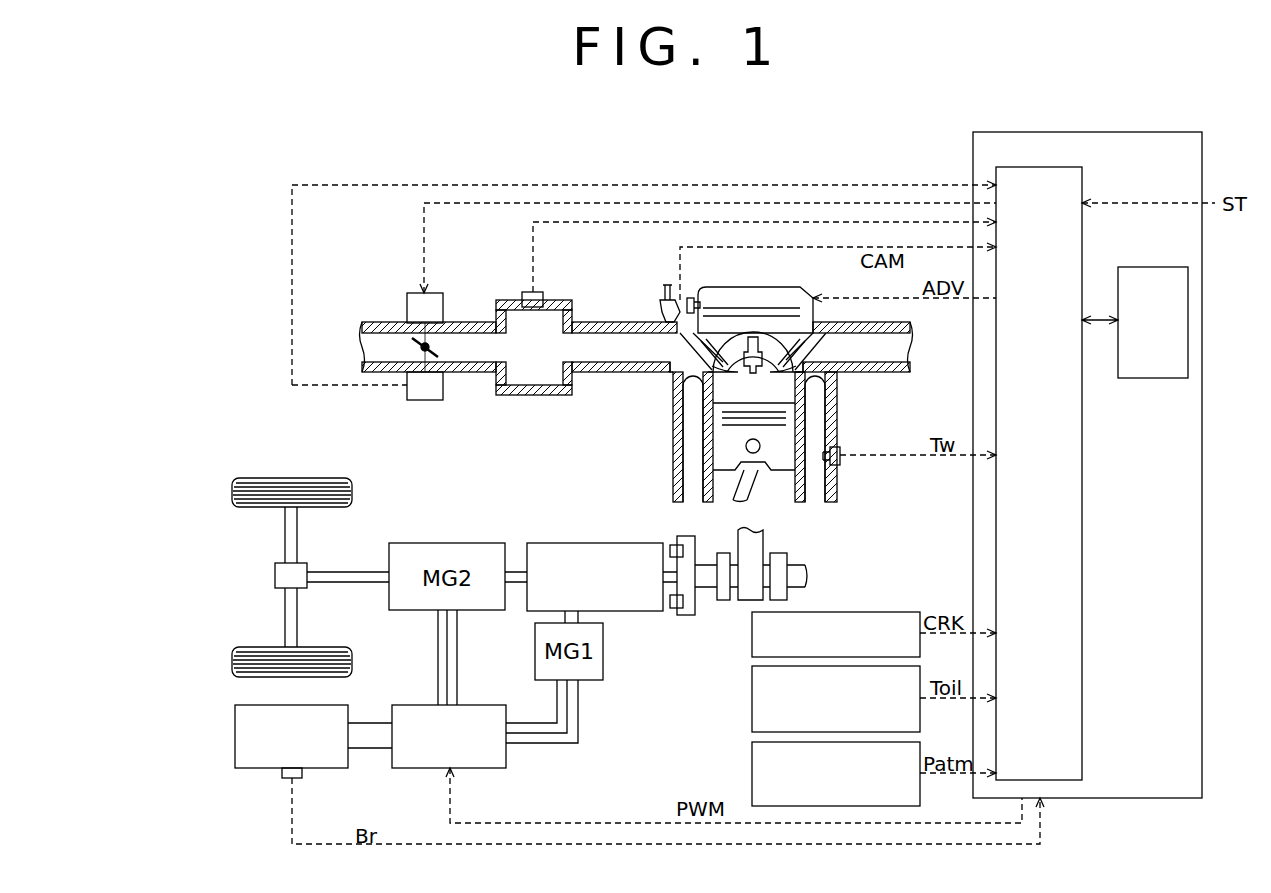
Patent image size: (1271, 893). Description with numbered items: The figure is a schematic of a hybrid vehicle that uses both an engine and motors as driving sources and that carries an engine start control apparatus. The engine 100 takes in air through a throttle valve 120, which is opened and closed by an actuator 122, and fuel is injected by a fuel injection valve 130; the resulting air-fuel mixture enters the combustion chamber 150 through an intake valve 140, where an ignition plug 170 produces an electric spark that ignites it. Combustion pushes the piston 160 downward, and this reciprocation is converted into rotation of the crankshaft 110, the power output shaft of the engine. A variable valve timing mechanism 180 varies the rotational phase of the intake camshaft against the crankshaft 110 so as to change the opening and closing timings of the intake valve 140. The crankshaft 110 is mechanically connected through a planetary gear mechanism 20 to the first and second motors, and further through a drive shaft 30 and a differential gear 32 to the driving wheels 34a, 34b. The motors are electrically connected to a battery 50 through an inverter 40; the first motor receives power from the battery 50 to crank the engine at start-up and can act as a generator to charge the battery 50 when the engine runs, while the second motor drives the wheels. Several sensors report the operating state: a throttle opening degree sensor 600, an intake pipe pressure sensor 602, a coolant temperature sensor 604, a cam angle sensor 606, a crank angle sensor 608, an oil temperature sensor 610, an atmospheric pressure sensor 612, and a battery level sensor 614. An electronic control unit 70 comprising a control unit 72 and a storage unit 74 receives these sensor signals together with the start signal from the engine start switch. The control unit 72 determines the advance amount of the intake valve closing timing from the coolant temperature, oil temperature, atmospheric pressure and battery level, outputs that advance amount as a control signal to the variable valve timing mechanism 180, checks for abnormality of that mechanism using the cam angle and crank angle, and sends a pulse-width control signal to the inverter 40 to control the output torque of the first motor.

The planetary gear mechanism 20 is at (608, 543).
The drive shaft 30 is at (348, 570).
The differential gear 32 is at (275, 577).
The driving wheel 34a is at (290, 478).
The driving wheel 34b is at (245, 678).
The inverter 40 is at (506, 760).
The battery 50 is at (235, 750).
The electronic control unit (ECU) 70 is at (1135, 132).
The control unit 72 is at (1082, 698).
The storage unit 74 is at (1150, 378).
The engine 100 is at (858, 526).
The crankshaft 110 is at (705, 597).
The throttle valve 120 is at (438, 352).
The actuator 122 is at (445, 306).
The fuel injection valve 130 is at (658, 300).
The intake valve 140 is at (697, 385).
The combustion chamber 150 is at (793, 396).
The piston 160 is at (788, 470).
The ignition plug 170 is at (751, 374).
The variable valve timing mechanism 180 is at (793, 278).
The throttle opening degree sensor 600 is at (425, 401).
The intake pipe pressure sensor 602 is at (543, 297).
The coolant temperature sensor 604 is at (840, 462).
The cam angle sensor 606 is at (690, 298).
The crank angle sensor 608 is at (752, 634).
The oil temperature sensor 610 is at (752, 700).
The atmospheric pressure sensor 612 is at (752, 772).
The battery level sensor 614 is at (302, 772).